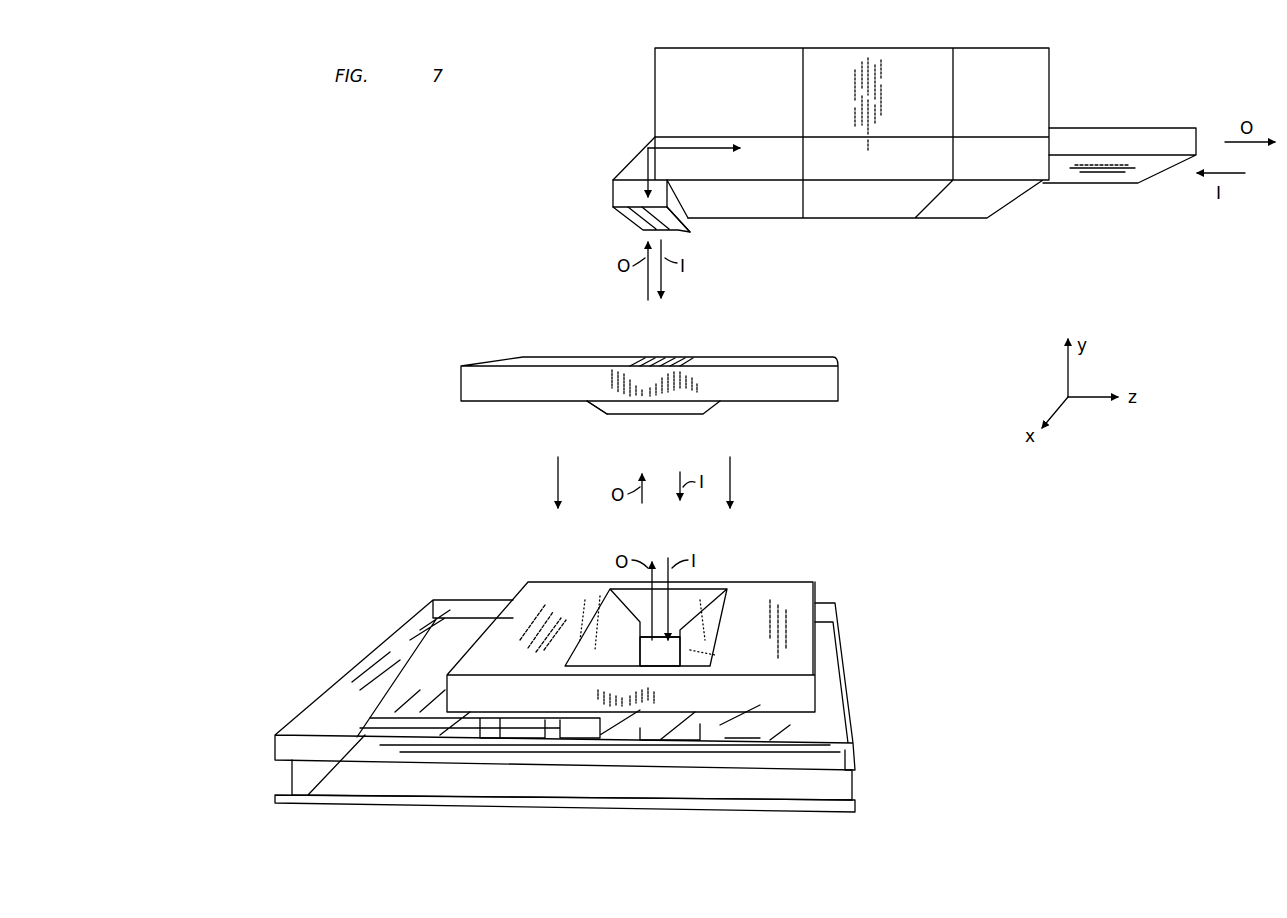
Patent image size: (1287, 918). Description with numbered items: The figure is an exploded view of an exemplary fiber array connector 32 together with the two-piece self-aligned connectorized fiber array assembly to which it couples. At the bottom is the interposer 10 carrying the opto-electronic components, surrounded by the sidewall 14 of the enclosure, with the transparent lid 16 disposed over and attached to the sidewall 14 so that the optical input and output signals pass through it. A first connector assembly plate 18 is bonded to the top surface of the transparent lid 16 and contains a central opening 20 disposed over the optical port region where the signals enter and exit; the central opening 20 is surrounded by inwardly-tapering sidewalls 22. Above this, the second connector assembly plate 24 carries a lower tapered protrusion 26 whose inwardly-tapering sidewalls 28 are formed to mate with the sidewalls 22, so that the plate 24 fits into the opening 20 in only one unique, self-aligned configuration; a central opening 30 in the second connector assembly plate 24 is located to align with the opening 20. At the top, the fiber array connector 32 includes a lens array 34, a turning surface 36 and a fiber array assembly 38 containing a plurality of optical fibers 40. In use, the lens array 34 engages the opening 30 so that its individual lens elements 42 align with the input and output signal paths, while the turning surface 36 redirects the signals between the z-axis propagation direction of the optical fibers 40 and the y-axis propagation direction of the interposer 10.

The interposer 10 is at (853, 795).
The sidewall 14 is at (300, 773).
The transparent lid 16 is at (412, 622).
The first connector assembly plate 18 is at (788, 592).
The central opening 20 is at (680, 633).
The inwardly-tapering sidewalls 22 is at (598, 637).
The second connector assembly plate 24 is at (836, 388).
The tapered protrusion 26 is at (665, 407).
The inwardly-tapering sidewalls 28 is at (595, 405).
The central opening 30 is at (668, 365).
The fiber array connector 32 is at (655, 85).
The lens array 34 is at (633, 215).
The turning surface 36 is at (642, 160).
The fiber array assembly 38 is at (1038, 87).
The optical fibers 40 is at (1133, 138).
The lens elements 42 is at (677, 222).